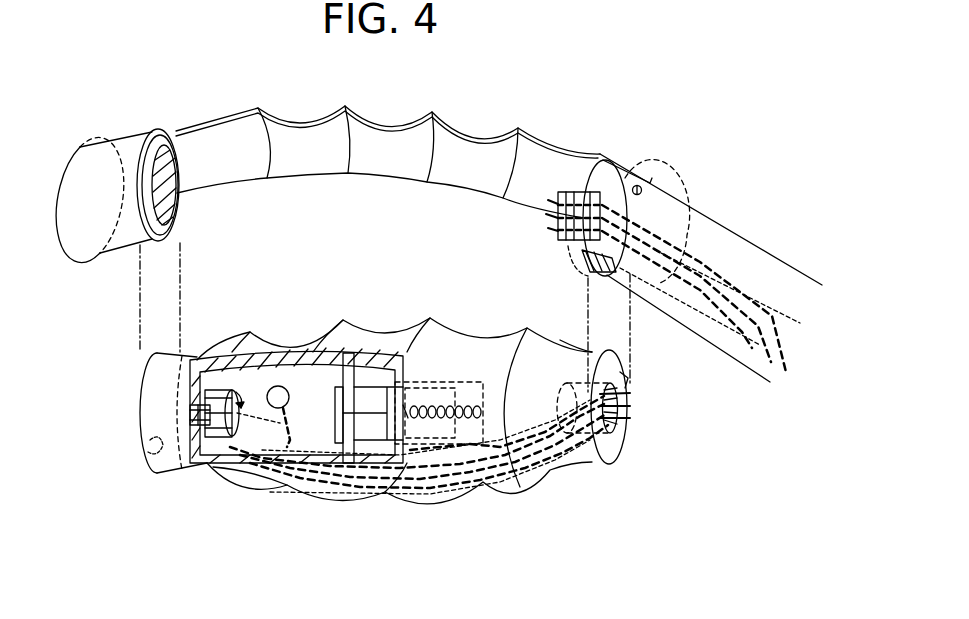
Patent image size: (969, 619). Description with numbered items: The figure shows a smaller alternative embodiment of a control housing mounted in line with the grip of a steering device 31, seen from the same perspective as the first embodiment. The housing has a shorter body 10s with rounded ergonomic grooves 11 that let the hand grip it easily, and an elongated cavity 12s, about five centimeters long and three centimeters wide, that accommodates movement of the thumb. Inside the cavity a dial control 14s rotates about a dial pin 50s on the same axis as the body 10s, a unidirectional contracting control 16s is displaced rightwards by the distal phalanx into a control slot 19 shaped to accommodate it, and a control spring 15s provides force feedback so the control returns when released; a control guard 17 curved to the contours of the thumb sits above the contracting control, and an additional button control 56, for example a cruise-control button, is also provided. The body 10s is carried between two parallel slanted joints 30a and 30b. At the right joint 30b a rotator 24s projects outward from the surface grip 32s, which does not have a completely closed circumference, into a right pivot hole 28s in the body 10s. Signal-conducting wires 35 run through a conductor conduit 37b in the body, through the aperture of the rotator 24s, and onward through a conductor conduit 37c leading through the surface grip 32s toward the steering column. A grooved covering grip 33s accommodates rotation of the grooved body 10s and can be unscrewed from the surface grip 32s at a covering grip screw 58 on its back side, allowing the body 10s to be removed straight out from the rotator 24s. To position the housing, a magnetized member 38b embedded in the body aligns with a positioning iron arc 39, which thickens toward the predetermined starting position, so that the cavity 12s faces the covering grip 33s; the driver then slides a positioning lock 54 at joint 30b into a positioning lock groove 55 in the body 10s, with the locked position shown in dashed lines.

The body 10s is at (577, 460).
The ergonomic grooves 11 is at (550, 473).
The cavity 12s is at (210, 456).
The dial control 14s is at (202, 390).
The control spring 15s is at (452, 403).
The contracting control 16s is at (337, 390).
The control guard 17 is at (343, 383).
The control slot 19 is at (460, 383).
The rotator 24s is at (557, 230).
The right pivot hole 28s is at (618, 423).
The slanted joint 30a is at (170, 232).
The slanted joint 30b is at (593, 180).
The steering device 31 is at (283, 219).
The surface grip 32s is at (695, 205).
The covering grip 33s is at (385, 128).
The signal-conducting wires 35 is at (630, 418).
The conductor conduit 37b is at (620, 460).
The conductor conduit 37c is at (707, 257).
The magnetized member 38b is at (150, 448).
The positioning iron arc 39 is at (150, 138).
The dial pin 50s is at (193, 413).
The positioning lock 54 is at (590, 267).
The positioning lock groove 55 is at (630, 378).
The button control 56 is at (270, 393).
The covering grip screw 58 is at (652, 183).